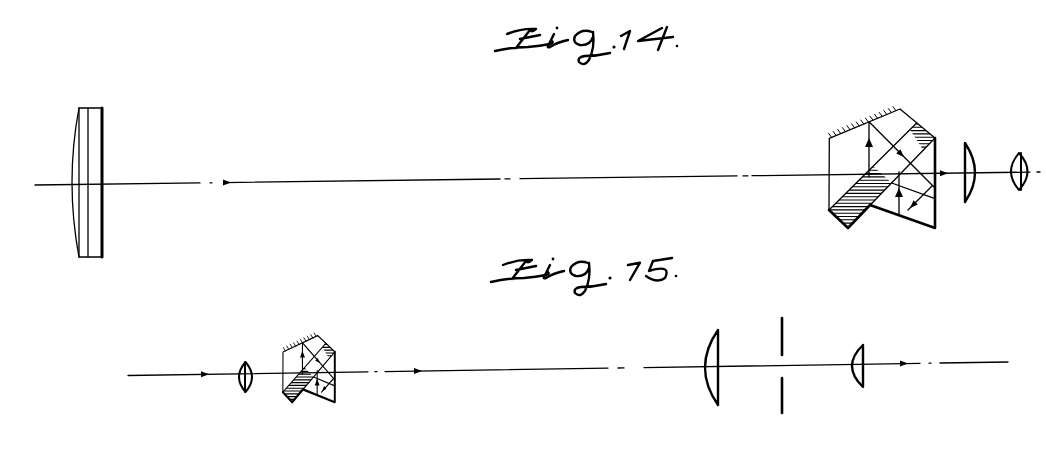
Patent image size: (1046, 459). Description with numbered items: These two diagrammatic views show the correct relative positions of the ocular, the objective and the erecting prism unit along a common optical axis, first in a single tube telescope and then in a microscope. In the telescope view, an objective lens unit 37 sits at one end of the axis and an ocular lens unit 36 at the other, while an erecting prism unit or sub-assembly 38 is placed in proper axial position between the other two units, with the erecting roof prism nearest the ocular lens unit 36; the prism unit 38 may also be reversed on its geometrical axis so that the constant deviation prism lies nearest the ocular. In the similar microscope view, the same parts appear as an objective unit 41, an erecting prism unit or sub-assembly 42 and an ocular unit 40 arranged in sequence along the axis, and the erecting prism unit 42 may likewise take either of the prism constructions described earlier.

In FIG. 14, the objective lens unit 37 is at (114, 243).
In FIG. 14, the erecting prism unit 38 is at (944, 213).
In FIG. 14, the ocular lens unit 36 is at (1035, 192).
In FIG. 15, the objective unit 41 is at (258, 392).
In FIG. 15, the erecting prism unit 42 is at (343, 398).
In FIG. 15, the ocular unit 40 is at (873, 402).